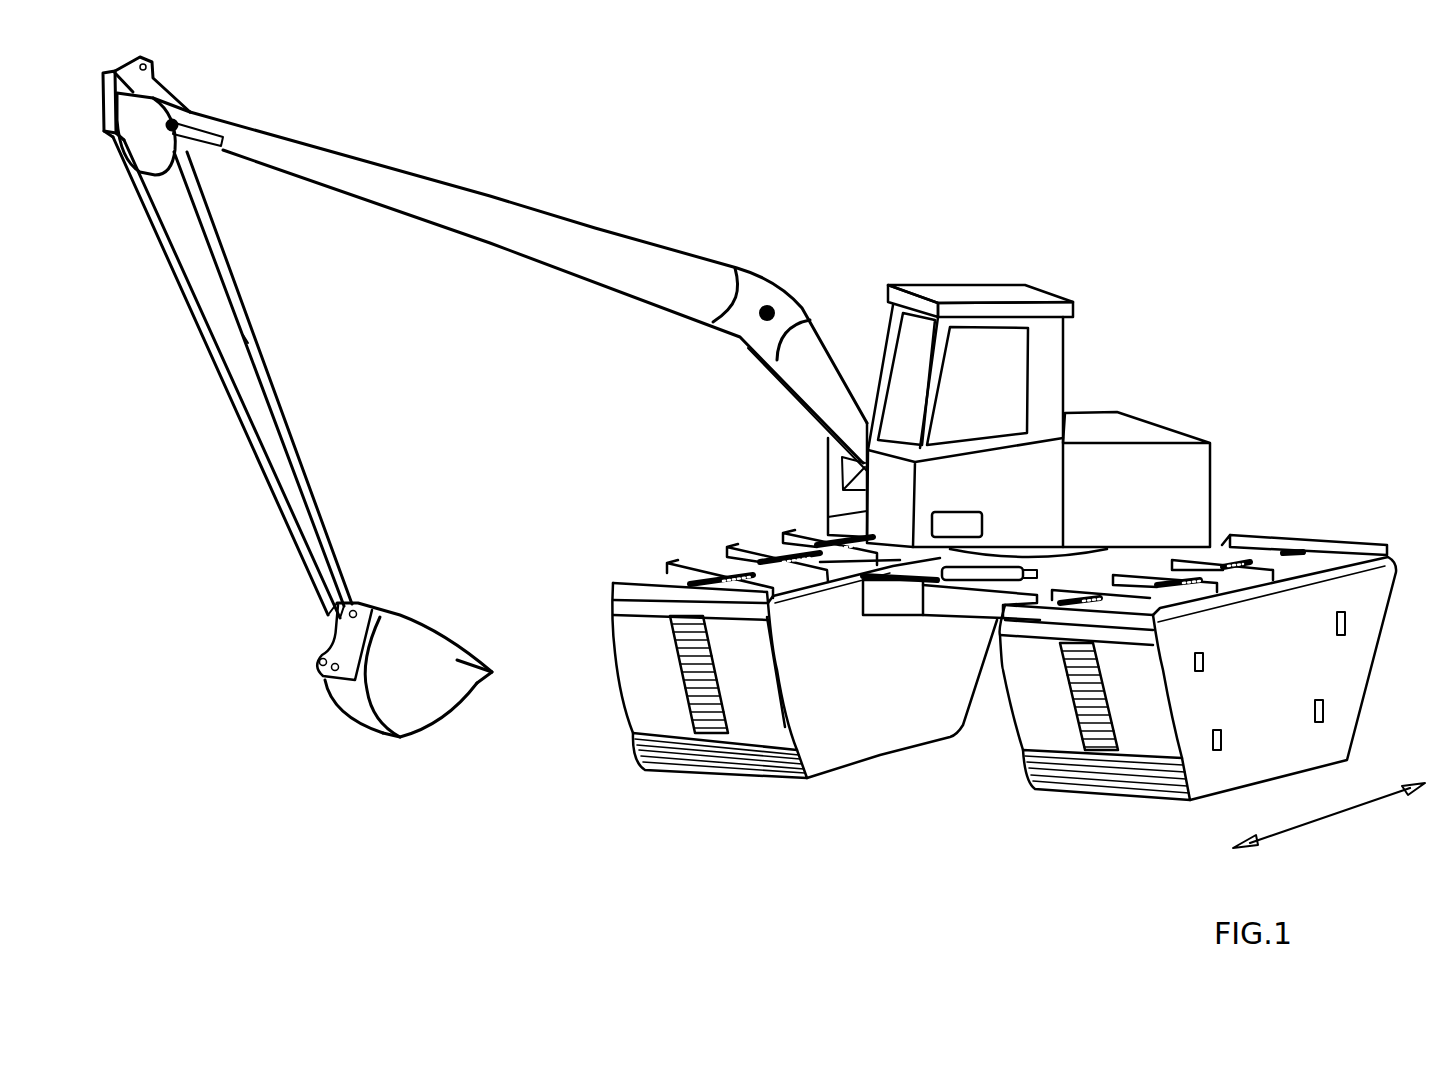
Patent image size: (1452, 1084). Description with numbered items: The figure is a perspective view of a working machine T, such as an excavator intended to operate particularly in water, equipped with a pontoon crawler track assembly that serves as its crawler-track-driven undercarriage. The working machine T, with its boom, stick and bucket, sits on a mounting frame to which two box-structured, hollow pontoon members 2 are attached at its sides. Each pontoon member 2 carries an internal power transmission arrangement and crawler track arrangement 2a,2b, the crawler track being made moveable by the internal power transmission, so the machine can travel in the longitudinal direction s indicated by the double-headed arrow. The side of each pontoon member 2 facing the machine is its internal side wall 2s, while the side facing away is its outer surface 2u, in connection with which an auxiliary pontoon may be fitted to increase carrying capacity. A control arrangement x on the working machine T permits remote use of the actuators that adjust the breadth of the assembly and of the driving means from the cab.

The working machine T is at (1098, 427).
The control arrangement x is at (932, 524).
The pontoon member 2 is at (979, 710).
The internal side wall 2s is at (848, 660).
The outer surface 2u is at (1273, 684).
The internal power transmission arrangement and crawler track arrangement 2a,2b is at (683, 750).
The longitudinal direction s is at (1302, 823).